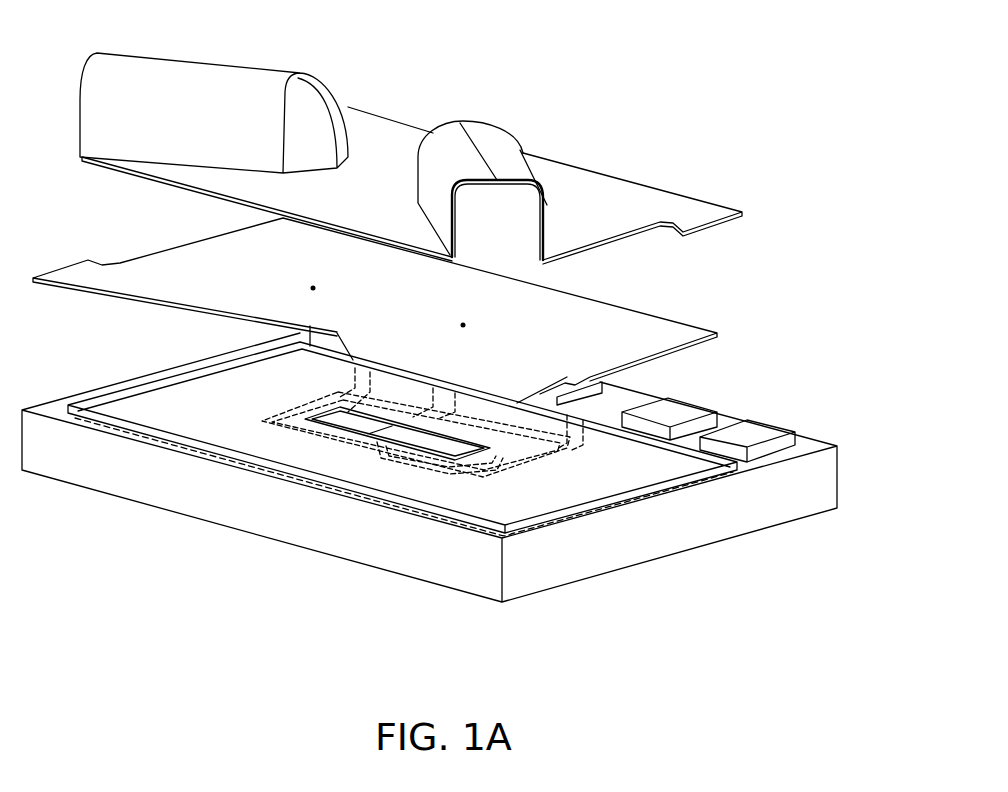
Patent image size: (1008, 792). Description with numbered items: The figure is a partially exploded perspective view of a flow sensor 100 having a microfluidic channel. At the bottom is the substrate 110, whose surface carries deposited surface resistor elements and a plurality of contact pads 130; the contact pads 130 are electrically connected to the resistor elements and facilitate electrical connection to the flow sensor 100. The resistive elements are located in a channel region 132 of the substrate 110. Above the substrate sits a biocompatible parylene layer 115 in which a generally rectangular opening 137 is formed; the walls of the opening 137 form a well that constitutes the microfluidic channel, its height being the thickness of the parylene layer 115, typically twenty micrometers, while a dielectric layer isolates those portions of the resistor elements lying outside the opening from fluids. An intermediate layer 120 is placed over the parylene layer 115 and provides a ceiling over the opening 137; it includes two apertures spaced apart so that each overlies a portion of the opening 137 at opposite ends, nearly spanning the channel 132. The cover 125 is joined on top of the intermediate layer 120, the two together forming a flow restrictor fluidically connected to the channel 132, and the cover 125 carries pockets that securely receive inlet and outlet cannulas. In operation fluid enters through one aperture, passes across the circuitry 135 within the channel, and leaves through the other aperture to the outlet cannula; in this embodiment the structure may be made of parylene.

The flow sensor 100 is at (580, 80).
The substrate 110 is at (820, 493).
The biocompatible polymer layer 115 is at (653, 483).
The intermediate layer 120 is at (636, 327).
The cover 125 is at (700, 207).
The contact pads 130 is at (763, 420).
The channel region 132 is at (480, 450).
The circuitry 135 is at (377, 433).
The opening 137 is at (320, 430).